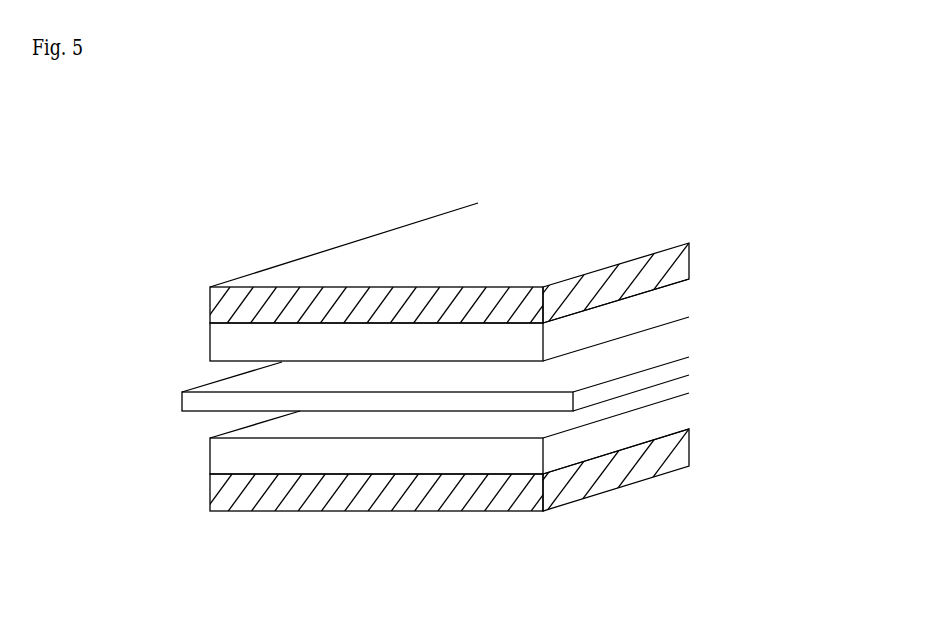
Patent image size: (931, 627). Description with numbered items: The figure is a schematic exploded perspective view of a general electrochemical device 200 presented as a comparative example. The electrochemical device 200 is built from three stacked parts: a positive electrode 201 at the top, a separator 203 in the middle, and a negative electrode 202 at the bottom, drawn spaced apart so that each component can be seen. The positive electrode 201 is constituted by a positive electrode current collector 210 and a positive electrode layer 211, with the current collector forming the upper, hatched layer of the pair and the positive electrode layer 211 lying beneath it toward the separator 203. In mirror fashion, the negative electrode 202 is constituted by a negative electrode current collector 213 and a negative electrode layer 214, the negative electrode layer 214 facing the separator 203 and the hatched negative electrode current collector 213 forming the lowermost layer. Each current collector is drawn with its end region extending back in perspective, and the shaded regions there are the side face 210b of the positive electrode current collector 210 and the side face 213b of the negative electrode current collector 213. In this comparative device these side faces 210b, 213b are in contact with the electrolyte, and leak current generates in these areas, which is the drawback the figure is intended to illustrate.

The electrochemical device 200 is at (738, 127).
The positive electrode 201 is at (120, 287).
The negative electrode 202 is at (120, 433).
The separator 203 is at (193, 403).
The positive electrode current collector 210 is at (218, 304).
The side face of positive electrode current collector 210b is at (683, 263).
The positive electrode layer 211 is at (220, 341).
The negative electrode current collector 213 is at (220, 486).
The side face of negative electrode current collector 213b is at (683, 453).
The negative electrode layer 214 is at (220, 449).